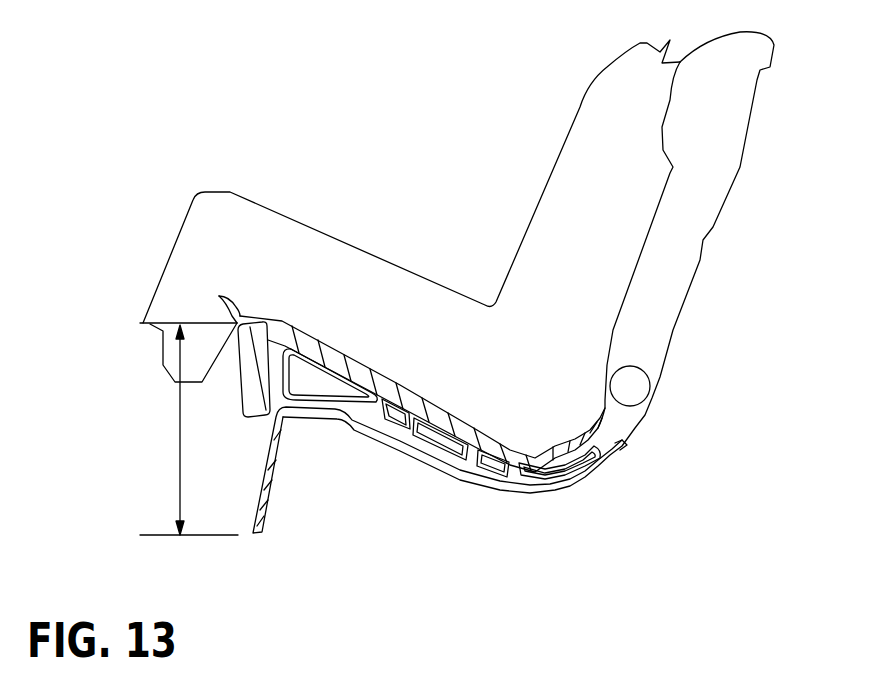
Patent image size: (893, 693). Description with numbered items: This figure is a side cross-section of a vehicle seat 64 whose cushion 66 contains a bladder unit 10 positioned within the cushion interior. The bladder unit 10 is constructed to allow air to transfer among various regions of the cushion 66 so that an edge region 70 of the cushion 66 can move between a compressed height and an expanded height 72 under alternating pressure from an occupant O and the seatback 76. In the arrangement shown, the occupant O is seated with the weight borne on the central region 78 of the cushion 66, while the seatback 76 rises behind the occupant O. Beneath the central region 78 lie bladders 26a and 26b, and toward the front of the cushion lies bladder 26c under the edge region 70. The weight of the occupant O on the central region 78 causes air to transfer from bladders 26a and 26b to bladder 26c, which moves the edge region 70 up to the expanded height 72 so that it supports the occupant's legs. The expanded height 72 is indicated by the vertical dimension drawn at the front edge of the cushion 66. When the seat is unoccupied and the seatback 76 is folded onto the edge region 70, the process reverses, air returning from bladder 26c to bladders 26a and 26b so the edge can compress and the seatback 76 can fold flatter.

The vehicle seat 64 is at (777, 72).
The seatback 76 is at (693, 218).
The occupant O is at (570, 172).
The central region 78 is at (495, 437).
The cushion 66 is at (403, 462).
The bladder unit 10 is at (276, 409).
The bladder 26c is at (315, 377).
The bladder 26a is at (480, 463).
The bladder 26b is at (543, 473).
The edge region 70 is at (257, 333).
The expanded height 72 is at (180, 422).